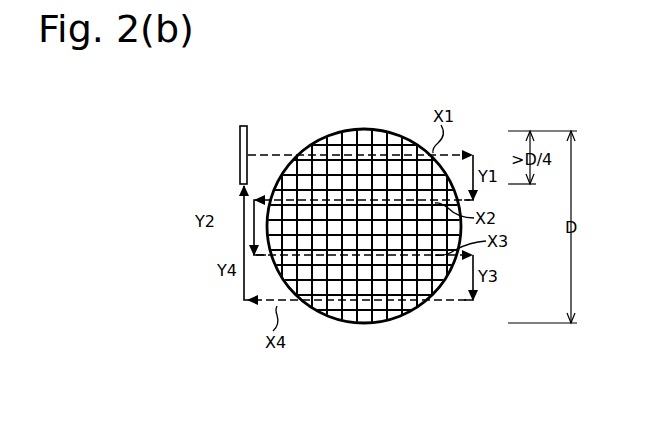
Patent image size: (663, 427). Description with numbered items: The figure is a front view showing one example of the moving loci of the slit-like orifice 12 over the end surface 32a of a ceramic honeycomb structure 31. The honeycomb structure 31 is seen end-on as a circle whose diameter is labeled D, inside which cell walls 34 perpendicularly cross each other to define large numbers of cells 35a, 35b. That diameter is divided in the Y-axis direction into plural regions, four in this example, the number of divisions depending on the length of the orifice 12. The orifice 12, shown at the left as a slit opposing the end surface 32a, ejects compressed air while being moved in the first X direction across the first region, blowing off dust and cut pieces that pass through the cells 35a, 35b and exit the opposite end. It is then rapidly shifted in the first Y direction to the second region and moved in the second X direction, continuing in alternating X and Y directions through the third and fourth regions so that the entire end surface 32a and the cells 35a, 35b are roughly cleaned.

The slit-like orifice 12 is at (239, 152).
The ceramic honeycomb structure 31 is at (300, 133).
The end surface 32a is at (351, 166).
The cell walls 34 is at (375, 158).
The cells 35a is at (373, 312).
The cells 35b is at (387, 344).